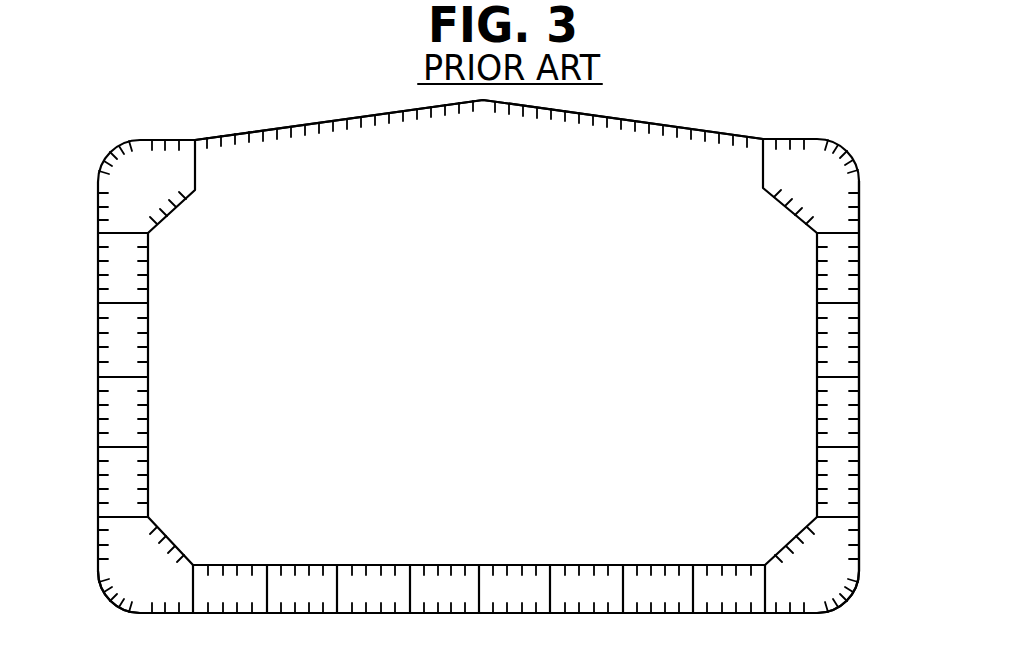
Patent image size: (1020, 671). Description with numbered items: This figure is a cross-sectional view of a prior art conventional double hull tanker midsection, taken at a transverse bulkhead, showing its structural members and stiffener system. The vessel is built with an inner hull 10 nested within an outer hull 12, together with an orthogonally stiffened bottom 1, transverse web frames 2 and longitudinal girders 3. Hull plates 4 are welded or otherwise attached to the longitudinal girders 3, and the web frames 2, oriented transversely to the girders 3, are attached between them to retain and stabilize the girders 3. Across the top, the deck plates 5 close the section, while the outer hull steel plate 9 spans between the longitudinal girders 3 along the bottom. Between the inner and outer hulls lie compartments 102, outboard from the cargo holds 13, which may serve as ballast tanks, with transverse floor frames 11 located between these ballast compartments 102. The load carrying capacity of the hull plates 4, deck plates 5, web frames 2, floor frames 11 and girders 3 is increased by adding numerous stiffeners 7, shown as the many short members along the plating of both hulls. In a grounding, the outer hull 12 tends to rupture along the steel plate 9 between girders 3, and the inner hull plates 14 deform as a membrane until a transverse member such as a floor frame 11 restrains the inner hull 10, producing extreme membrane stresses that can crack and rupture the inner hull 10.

The orthogonally stiffened bottom 1 is at (823, 608).
The transverse web frame 2 is at (843, 487).
The longitudinal girder 3 is at (690, 585).
The hull plate 4 is at (817, 412).
The deck plate 5 is at (707, 128).
The stiffener 7 is at (453, 110).
The steel plate 9 is at (673, 612).
The inner hull 10 is at (817, 326).
The floor frame 11 is at (730, 585).
The outer hull 12 is at (860, 255).
The cargo hold 13 is at (170, 344).
The inner hull plate 14 is at (228, 565).
The compartment 102 is at (305, 580).